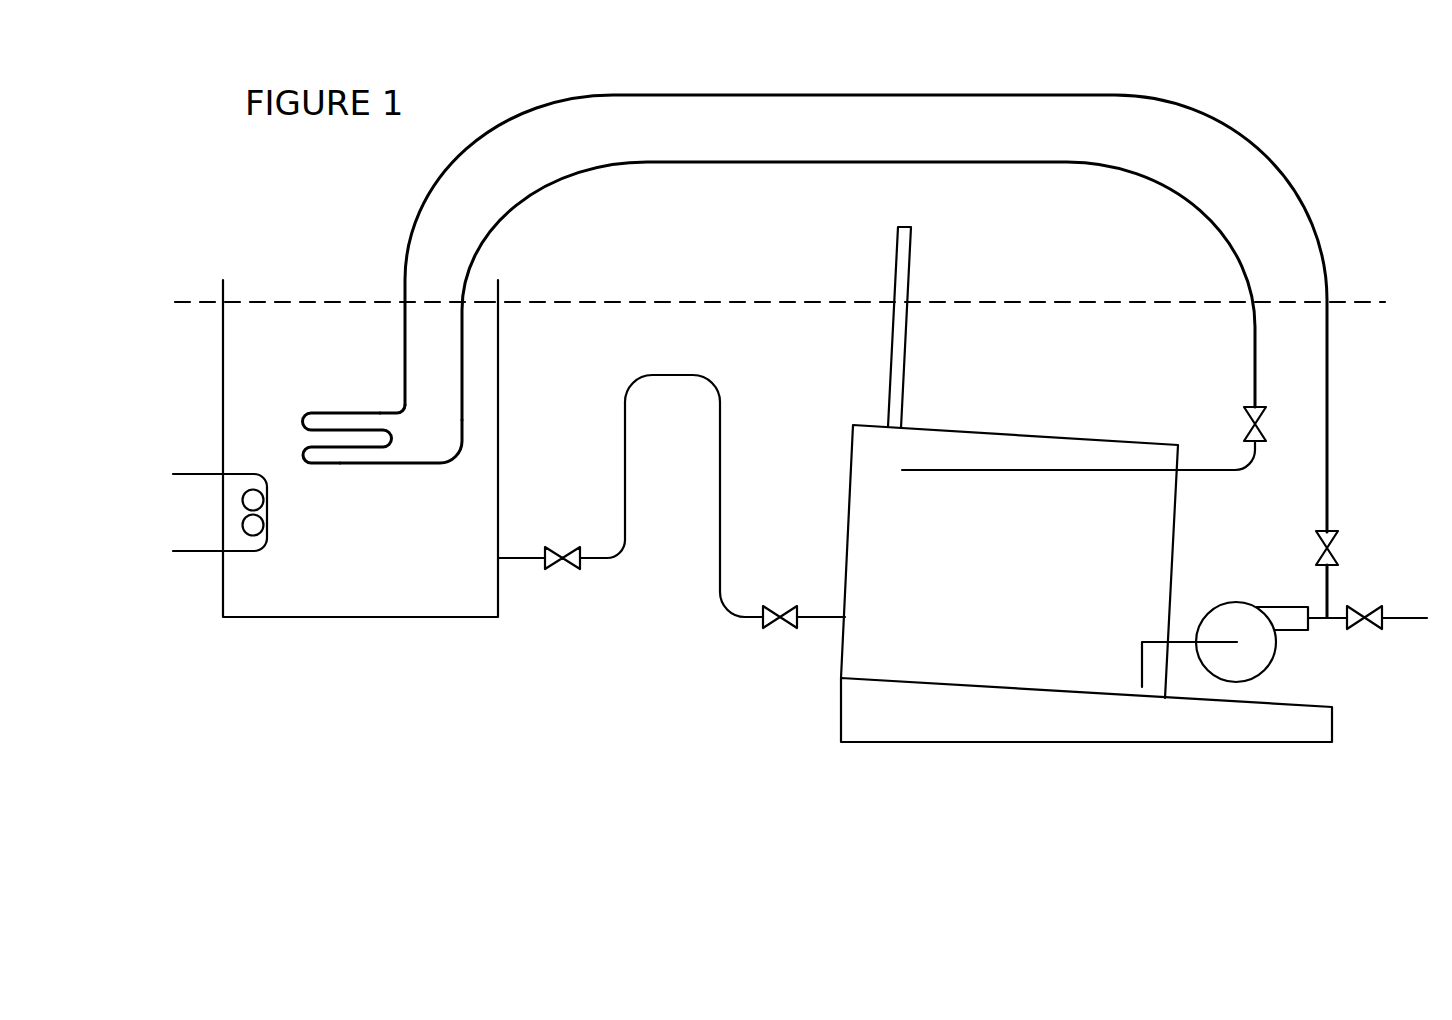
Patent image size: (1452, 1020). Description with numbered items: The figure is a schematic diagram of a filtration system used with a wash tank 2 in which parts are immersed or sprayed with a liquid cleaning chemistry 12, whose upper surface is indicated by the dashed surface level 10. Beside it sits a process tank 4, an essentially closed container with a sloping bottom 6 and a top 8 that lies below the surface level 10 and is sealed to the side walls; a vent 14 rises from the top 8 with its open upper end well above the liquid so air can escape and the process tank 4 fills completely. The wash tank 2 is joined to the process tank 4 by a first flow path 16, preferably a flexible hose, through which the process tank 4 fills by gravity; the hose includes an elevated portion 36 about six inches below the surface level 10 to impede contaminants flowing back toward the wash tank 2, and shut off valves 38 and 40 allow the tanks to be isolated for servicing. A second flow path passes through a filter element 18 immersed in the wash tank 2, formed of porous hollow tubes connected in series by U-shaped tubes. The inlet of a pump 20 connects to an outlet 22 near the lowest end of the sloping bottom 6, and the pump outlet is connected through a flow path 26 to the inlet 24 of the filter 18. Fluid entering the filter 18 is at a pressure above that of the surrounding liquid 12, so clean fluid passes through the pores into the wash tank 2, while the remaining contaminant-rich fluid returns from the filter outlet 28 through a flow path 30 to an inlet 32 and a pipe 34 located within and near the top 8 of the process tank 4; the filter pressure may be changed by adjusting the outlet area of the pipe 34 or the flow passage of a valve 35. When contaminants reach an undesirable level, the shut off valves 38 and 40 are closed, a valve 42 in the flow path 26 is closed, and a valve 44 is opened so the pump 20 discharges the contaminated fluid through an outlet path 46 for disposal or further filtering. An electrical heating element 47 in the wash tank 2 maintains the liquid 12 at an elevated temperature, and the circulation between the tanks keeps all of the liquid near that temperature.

The wash tank 2 is at (308, 281).
The process tank 4 is at (1065, 417).
The sloping bottom 6 is at (953, 685).
The top 8 is at (985, 425).
The surface level 10 is at (670, 300).
The liquid cleaning chemistry 12 is at (243, 378).
The vent 14 is at (912, 263).
The first flow path 16 is at (752, 498).
The filter element 18 is at (340, 412).
The pump 20 is at (1262, 672).
The outlet 22 is at (1140, 660).
The inlet 24 is at (406, 415).
The flow path 26 is at (1275, 166).
The outlet 28 is at (390, 470).
The flow path 30 is at (1125, 180).
The inlet 32 is at (1217, 472).
The pipe 34 is at (1037, 471).
The valve 35 is at (1267, 425).
The elevated portion 36 is at (667, 375).
The shut off valve 38 is at (560, 545).
The shut off valve 40 is at (777, 606).
The valve 42 is at (1340, 548).
The valve 44 is at (1365, 622).
The outlet path 46 is at (1408, 615).
The electrical heating element 47 is at (250, 552).